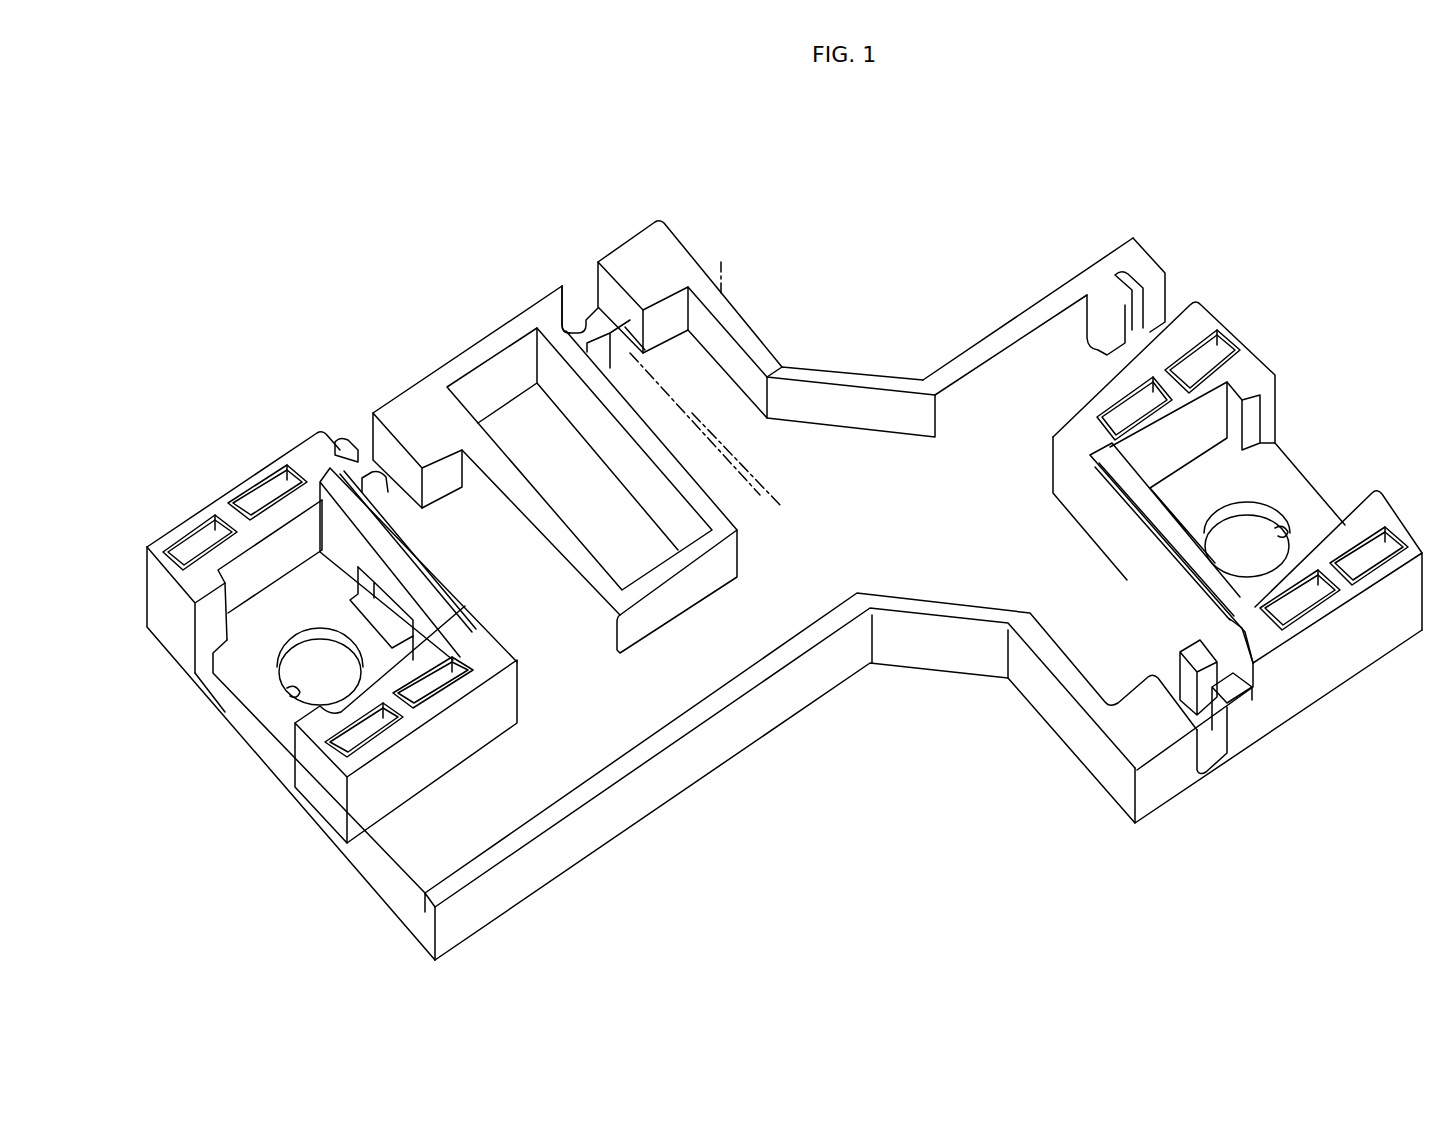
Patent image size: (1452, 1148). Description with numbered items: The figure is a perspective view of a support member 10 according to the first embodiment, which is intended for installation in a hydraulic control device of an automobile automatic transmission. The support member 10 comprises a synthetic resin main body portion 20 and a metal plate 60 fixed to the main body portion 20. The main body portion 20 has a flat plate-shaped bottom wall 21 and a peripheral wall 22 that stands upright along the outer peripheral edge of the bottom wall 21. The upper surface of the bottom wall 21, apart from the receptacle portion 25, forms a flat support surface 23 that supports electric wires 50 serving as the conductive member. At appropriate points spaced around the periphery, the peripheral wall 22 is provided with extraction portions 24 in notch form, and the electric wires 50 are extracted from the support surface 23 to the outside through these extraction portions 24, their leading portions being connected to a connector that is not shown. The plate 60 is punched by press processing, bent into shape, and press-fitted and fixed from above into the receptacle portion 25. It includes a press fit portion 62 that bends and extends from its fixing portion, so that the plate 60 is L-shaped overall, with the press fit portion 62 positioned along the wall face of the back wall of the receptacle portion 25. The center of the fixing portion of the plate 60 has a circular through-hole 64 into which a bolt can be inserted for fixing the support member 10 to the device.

The support member 10 is at (898, 245).
The main body portion 20 is at (1047, 292).
The bottom wall 21 is at (383, 898).
The peripheral wall 22 is at (806, 370).
The support surface 23 is at (400, 855).
The extraction portion 24 is at (575, 292).
The receptacle portion 25 is at (258, 563).
The electric wire 50 is at (718, 427).
The plate 60 is at (248, 677).
The press fit portion 62 is at (318, 478).
The through-hole 64 is at (290, 692).